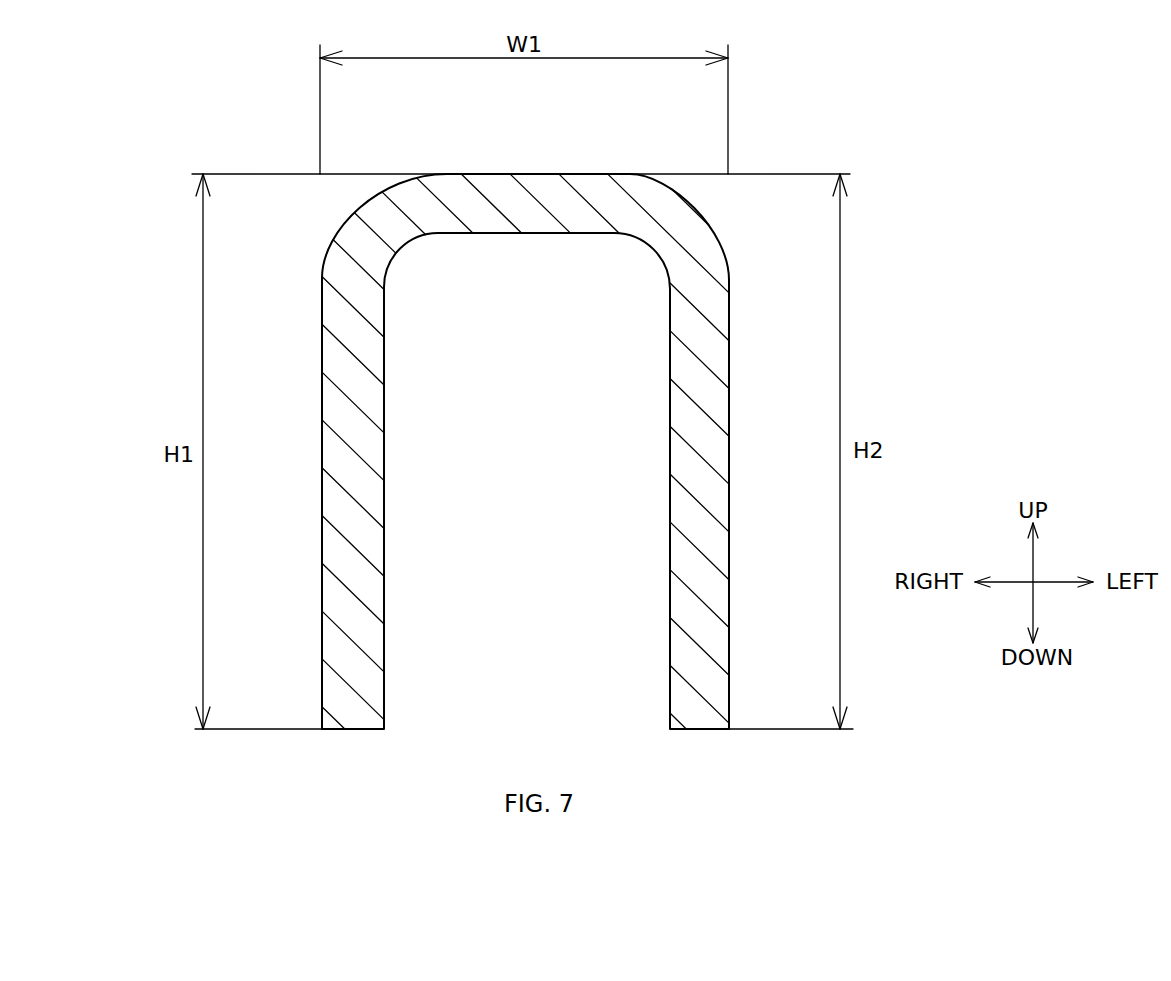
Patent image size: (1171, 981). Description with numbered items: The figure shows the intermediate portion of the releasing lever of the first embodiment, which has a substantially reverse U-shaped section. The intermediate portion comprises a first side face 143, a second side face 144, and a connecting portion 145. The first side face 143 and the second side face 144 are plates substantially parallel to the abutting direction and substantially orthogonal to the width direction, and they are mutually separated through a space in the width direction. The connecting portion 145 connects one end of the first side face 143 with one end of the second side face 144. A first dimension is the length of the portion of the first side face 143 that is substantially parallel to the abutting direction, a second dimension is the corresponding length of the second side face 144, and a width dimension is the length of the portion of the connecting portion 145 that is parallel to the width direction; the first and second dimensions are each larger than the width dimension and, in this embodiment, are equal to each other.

The first side face 143 is at (322, 445).
The second side face 144 is at (731, 457).
The connecting portion 145 is at (533, 174).